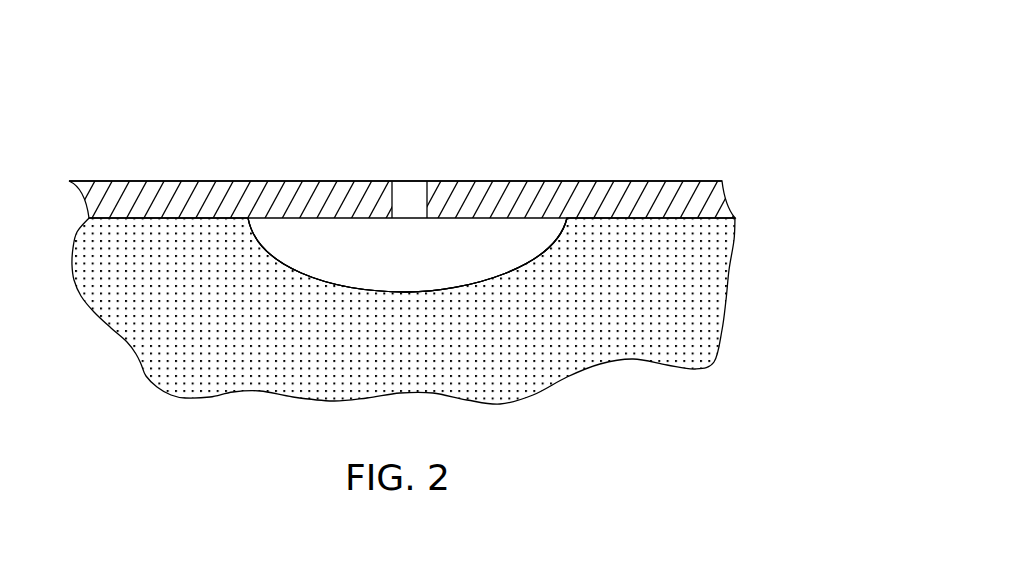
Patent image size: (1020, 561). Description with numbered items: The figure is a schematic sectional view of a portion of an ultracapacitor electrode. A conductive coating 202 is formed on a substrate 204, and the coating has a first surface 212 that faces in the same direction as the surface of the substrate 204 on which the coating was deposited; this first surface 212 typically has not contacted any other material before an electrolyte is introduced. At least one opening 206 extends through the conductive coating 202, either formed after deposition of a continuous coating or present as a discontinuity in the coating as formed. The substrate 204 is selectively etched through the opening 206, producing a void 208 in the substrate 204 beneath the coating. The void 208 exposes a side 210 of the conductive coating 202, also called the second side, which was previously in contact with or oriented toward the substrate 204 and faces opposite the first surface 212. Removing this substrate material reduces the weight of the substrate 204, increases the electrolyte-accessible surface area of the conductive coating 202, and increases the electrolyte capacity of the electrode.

The conductive coating 202 is at (722, 181).
The substrate 204 is at (726, 302).
The opening 206 is at (423, 181).
The void 208 is at (518, 238).
The side of the conductive coating 210 is at (323, 218).
The first surface 212 is at (180, 181).